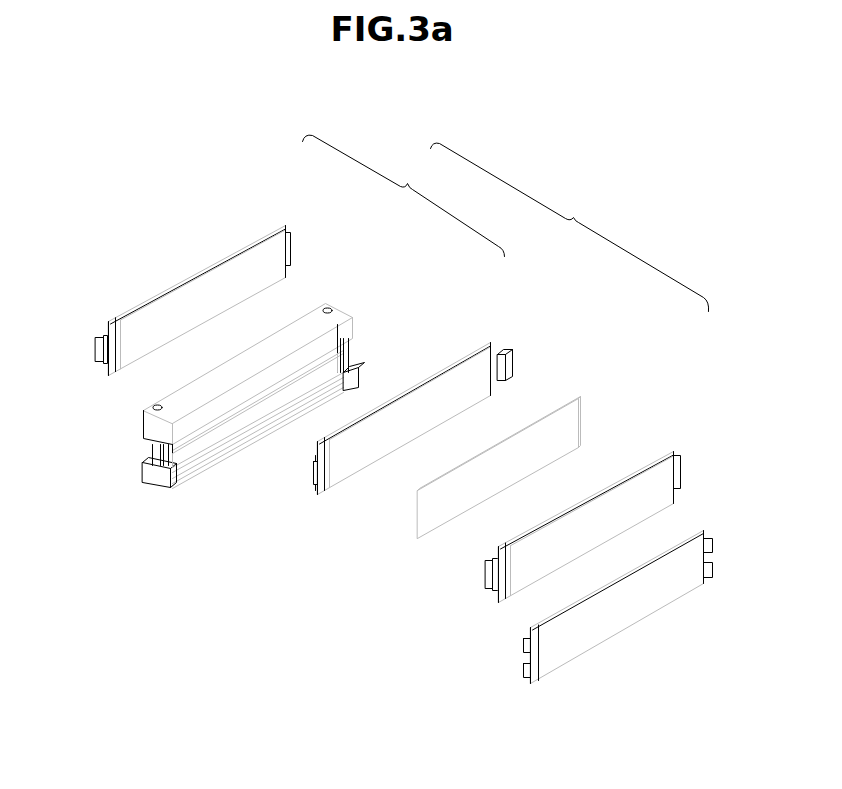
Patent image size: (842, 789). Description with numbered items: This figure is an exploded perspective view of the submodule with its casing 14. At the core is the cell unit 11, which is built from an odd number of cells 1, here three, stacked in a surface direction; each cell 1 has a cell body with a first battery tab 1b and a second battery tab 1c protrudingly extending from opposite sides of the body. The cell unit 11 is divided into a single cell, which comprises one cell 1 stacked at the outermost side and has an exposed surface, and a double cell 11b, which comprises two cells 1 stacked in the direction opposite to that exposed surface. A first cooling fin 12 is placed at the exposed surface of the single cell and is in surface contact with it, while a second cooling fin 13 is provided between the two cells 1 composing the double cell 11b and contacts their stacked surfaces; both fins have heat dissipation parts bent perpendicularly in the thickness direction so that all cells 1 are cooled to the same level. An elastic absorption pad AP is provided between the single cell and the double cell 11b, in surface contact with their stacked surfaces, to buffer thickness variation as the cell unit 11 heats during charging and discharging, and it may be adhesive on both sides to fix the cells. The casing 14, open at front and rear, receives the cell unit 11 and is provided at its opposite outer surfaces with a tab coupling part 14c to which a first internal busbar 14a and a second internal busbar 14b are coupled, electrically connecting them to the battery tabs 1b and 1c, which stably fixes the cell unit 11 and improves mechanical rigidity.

The cell 1 is at (284, 223).
The first battery tab 1b is at (95, 350).
The second battery tab 1c is at (291, 246).
The cell unit 11 is at (570, 227).
The double cell 11b is at (404, 195).
The first cooling fin 12 is at (548, 660).
The second cooling fin 13 is at (187, 441).
The casing 14 is at (247, 413).
The first internal busbar 14a is at (150, 452).
The second internal busbar 14b is at (349, 347).
The tab coupling part 14c is at (151, 433).
The elastic absorption pad AP is at (576, 398).